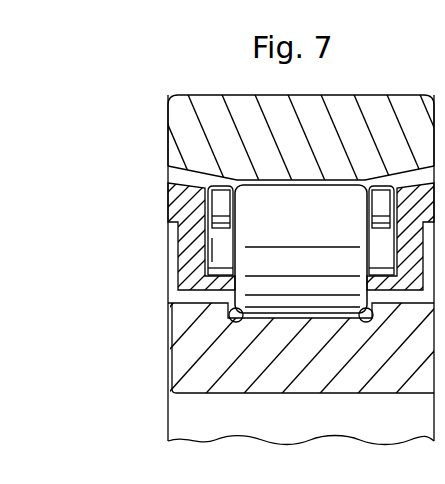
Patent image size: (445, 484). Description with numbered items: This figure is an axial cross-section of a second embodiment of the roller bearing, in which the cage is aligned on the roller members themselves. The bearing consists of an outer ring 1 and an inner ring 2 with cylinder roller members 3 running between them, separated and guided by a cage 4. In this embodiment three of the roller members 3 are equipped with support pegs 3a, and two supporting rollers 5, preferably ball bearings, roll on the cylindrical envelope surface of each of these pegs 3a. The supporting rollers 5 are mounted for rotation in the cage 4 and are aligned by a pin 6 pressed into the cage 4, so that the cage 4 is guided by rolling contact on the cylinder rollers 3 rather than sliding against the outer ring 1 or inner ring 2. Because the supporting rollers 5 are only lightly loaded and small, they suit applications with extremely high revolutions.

The outer ring 1 is at (203, 142).
The inner ring 2 is at (220, 365).
The roller member 3 is at (270, 284).
The support peg 3a is at (220, 243).
The cage 4 is at (213, 281).
The supporting roller 5 is at (170, 181).
The pin 6 is at (183, 212).